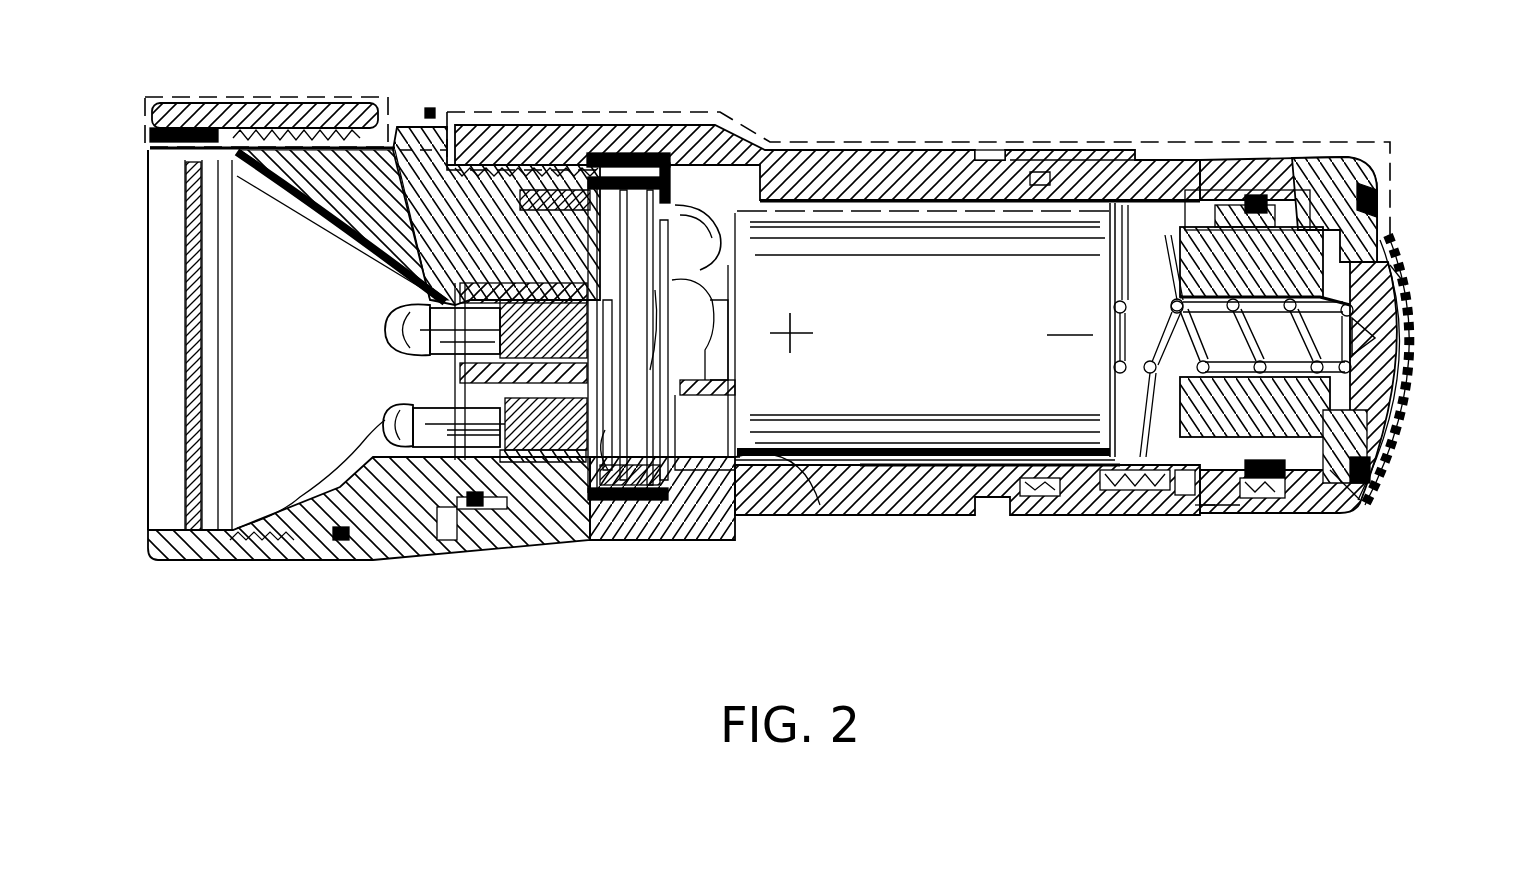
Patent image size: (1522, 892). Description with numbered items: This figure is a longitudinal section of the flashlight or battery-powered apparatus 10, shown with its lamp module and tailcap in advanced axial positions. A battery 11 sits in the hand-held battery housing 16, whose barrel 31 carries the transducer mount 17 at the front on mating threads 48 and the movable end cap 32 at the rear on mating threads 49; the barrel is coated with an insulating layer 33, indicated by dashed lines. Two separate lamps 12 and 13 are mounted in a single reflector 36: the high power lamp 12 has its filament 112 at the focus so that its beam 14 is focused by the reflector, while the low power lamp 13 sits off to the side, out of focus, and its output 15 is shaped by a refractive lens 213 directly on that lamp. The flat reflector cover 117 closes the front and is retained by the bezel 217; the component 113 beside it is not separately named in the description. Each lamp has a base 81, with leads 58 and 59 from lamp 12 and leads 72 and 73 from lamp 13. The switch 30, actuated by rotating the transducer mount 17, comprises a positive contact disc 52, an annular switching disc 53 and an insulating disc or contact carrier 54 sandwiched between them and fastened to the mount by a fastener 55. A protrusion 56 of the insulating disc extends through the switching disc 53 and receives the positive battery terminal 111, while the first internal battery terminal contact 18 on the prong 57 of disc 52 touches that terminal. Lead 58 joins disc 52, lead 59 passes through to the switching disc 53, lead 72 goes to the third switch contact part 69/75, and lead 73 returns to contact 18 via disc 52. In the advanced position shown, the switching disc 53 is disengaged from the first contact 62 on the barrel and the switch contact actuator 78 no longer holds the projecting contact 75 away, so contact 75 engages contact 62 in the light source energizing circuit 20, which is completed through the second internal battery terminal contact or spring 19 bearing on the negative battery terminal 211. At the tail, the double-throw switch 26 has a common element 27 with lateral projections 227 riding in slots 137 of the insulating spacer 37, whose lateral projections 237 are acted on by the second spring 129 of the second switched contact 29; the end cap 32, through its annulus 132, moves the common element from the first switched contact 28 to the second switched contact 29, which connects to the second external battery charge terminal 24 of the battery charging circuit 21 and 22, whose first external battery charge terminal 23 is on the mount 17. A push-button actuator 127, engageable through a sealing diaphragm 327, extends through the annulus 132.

The battery-powered apparatus 10 is at (1032, 150).
The battery 11 is at (858, 344).
The first electric lamp 12 is at (410, 307).
The second electric lamp 13 is at (413, 402).
The light output 14 is at (380, 327).
The light output 15 is at (382, 418).
The hand-held battery housing 16 is at (912, 150).
The transducer mount 17 is at (435, 110).
The first internal battery terminal contact 18 is at (757, 222).
The second internal battery terminal contact 19 is at (1060, 515).
The electric transducer energizing circuit 20 is at (970, 150).
The battery charging circuit 21 is at (432, 512).
The battery charging circuit 22 is at (1362, 500).
The first external battery charge terminal 23 is at (405, 540).
The second external battery charge terminal 24 is at (1150, 516).
The double-throw switch 26 is at (1252, 190).
The common switch element 27 is at (1395, 374).
The first switched contact 28 is at (1195, 508).
The second switched contact 29 is at (1255, 510).
The switch 30 is at (615, 178).
The barrel 31 is at (960, 500).
The end cap 32 is at (1162, 156).
The layer of electrically insulating material 33 is at (260, 97).
The reflector 36 is at (277, 258).
The insulating spacer 37 is at (1360, 500).
The mating threads 48 is at (546, 165).
The mating threads 49 is at (1120, 520).
The positive contact disc 52 is at (590, 175).
The switching disc 53 is at (712, 512).
The insulating disc 54 is at (690, 512).
The fastener 55 is at (687, 227).
The protrusion 56 is at (802, 510).
The prong 57 is at (707, 227).
The lead 58 is at (530, 180).
The lead 59 is at (552, 512).
The first switch contact part 62 is at (750, 512).
The third switch contact part 69 is at (633, 512).
The lead 72 is at (512, 462).
The lead 73 is at (600, 512).
The third switch contact part 75 is at (668, 200).
The switch contact actuator 78 is at (657, 512).
The base 81 is at (480, 507).
The positive battery terminal 111 is at (895, 465).
The filament 112 is at (396, 128).
The lens seal 113 is at (338, 541).
The lens 117 is at (205, 462).
The push-button on/off actuator 127 is at (1412, 312).
The second spring 129 is at (1338, 157).
The annulus 132 is at (1385, 450).
The slots 137 is at (1295, 500).
The negative battery terminal 211 is at (1110, 392).
The refractive lens 213 is at (290, 557).
The bezel 217 is at (170, 100).
The lateral projections 227 is at (1200, 512).
The lateral projections 237 is at (1226, 190).
The sealing diaphragm 327 is at (1408, 290).